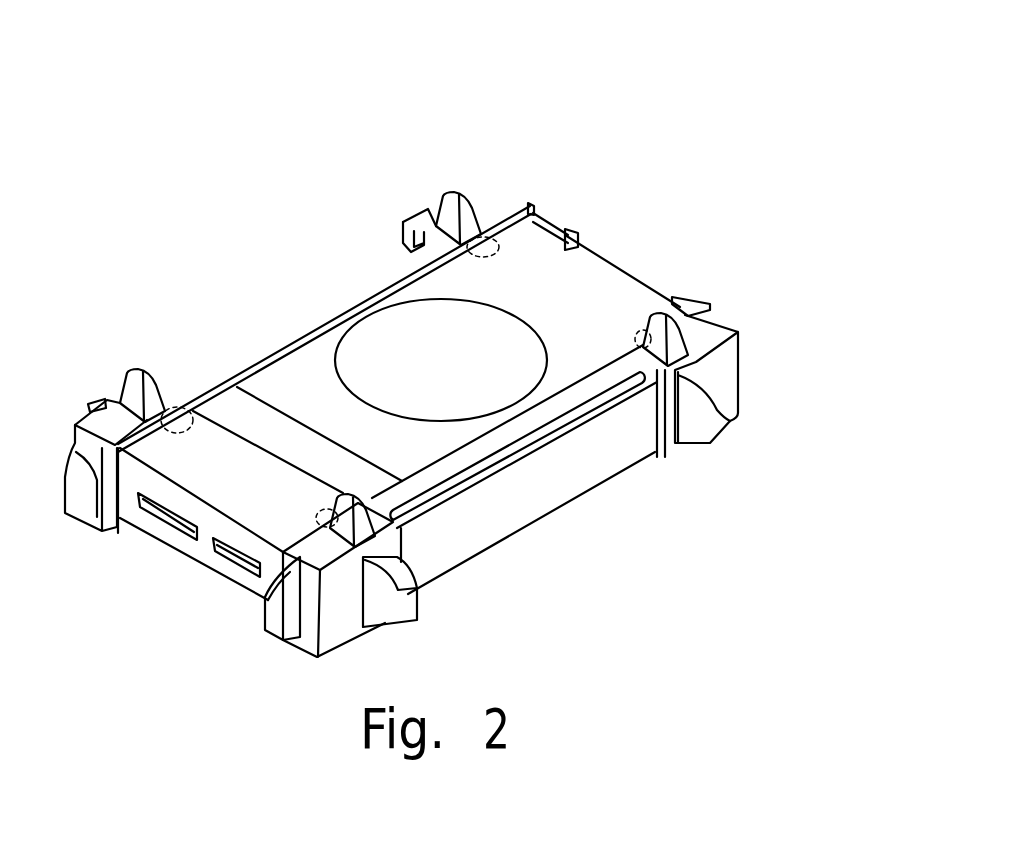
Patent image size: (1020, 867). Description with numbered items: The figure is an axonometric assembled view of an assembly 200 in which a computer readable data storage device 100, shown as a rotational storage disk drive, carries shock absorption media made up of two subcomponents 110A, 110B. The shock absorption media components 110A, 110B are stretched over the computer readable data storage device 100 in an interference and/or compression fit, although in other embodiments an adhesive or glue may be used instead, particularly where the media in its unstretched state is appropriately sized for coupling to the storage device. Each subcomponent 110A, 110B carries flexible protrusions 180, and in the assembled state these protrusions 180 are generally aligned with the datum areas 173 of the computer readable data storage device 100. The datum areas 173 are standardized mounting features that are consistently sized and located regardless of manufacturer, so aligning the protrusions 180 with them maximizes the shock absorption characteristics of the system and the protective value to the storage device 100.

The computer readable data storage device 100 is at (612, 270).
The assembly 200 is at (716, 98).
The shock absorption media subcomponent 110A is at (495, 186).
The shock absorption media subcomponent 110B is at (347, 648).
The protrusion 180 is at (130, 372).
The datum area 173 is at (171, 432).